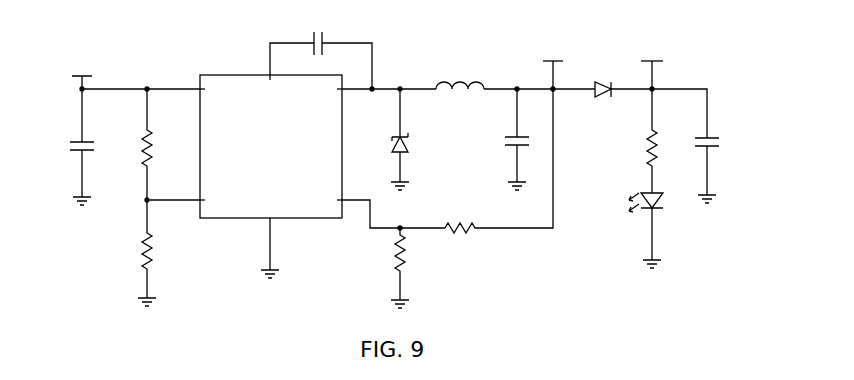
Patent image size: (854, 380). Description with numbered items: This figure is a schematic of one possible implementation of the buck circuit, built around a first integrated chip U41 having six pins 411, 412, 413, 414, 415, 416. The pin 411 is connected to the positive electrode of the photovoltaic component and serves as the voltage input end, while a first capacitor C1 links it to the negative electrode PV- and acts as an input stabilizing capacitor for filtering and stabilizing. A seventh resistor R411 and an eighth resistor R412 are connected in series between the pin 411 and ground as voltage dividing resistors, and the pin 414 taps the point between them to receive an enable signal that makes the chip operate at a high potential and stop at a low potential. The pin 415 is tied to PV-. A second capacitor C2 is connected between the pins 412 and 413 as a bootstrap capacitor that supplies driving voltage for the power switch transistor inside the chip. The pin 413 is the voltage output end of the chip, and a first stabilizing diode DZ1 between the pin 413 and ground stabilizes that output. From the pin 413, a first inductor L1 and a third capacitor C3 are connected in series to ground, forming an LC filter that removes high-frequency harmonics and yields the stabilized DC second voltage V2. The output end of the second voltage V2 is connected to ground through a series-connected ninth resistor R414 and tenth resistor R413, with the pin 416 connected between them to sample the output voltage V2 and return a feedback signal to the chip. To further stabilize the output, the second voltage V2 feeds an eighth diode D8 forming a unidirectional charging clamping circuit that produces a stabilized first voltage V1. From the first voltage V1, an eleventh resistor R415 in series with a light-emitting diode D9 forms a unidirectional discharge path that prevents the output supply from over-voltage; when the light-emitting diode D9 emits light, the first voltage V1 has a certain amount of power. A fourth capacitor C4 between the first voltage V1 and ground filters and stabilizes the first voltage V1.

The first capacitor C1 is at (92, 147).
The second capacitor C2 is at (321, 50).
The third capacitor C3 is at (525, 139).
The fourth capacitor C4 is at (717, 170).
The seventh resistor R411 is at (171, 144).
The eighth resistor R412 is at (166, 253).
The tenth resistor R413 is at (419, 268).
The ninth resistor R414 is at (467, 217).
The eleventh resistor R415 is at (626, 161).
The first integrated chip U41 is at (271, 146).
The pin 411 is at (218, 90).
The pin 412 is at (271, 86).
The pin 413 is at (326, 90).
The pin 414 is at (218, 207).
The pin 415 is at (271, 238).
The pin 416 is at (326, 207).
The first inductor L1 is at (460, 76).
The first stabilizing diode DZ1 is at (420, 139).
The eighth diode D8 is at (603, 79).
The light-emitting diode D9 is at (657, 230).
The first voltage V1 is at (652, 50).
The second voltage V2 is at (553, 50).
The negative electrode of the photovoltaic component PV- is at (74, 233).